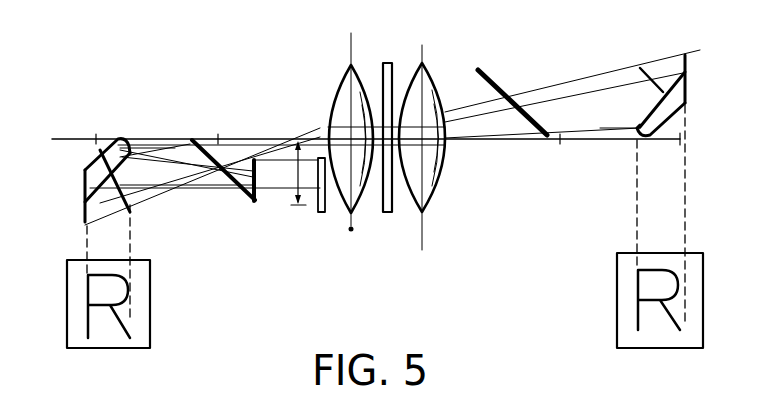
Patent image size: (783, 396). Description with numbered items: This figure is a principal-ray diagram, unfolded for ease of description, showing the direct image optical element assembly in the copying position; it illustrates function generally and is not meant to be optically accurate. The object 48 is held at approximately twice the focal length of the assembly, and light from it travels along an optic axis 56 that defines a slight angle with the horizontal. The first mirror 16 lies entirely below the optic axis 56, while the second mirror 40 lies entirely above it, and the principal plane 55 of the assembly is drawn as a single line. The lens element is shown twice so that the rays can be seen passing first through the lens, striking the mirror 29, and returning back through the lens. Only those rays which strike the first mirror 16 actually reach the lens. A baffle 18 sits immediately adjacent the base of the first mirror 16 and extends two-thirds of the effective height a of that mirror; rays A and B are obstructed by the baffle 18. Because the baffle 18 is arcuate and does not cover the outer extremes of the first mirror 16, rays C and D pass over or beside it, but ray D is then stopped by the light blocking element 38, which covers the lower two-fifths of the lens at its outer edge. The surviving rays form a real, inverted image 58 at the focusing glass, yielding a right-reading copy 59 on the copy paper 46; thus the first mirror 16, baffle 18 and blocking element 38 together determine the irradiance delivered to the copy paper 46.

The first mirror 16 is at (249, 197).
The baffle 18 is at (258, 203).
The mirror 29 is at (383, 68).
The light blocking element 38 is at (321, 214).
The second mirror 40 is at (498, 82).
The copy paper 46 is at (617, 338).
The object 48 is at (90, 165).
The principal plane 55 is at (353, 230).
The optic axis 56 is at (96, 140).
The real inverted image 58 is at (690, 95).
The right-reading copy 59 is at (698, 253).
The ray A is at (136, 172).
The ray B is at (158, 172).
The ray C is at (190, 175).
The ray D is at (215, 190).
The effective height of the mirror a is at (298, 173).